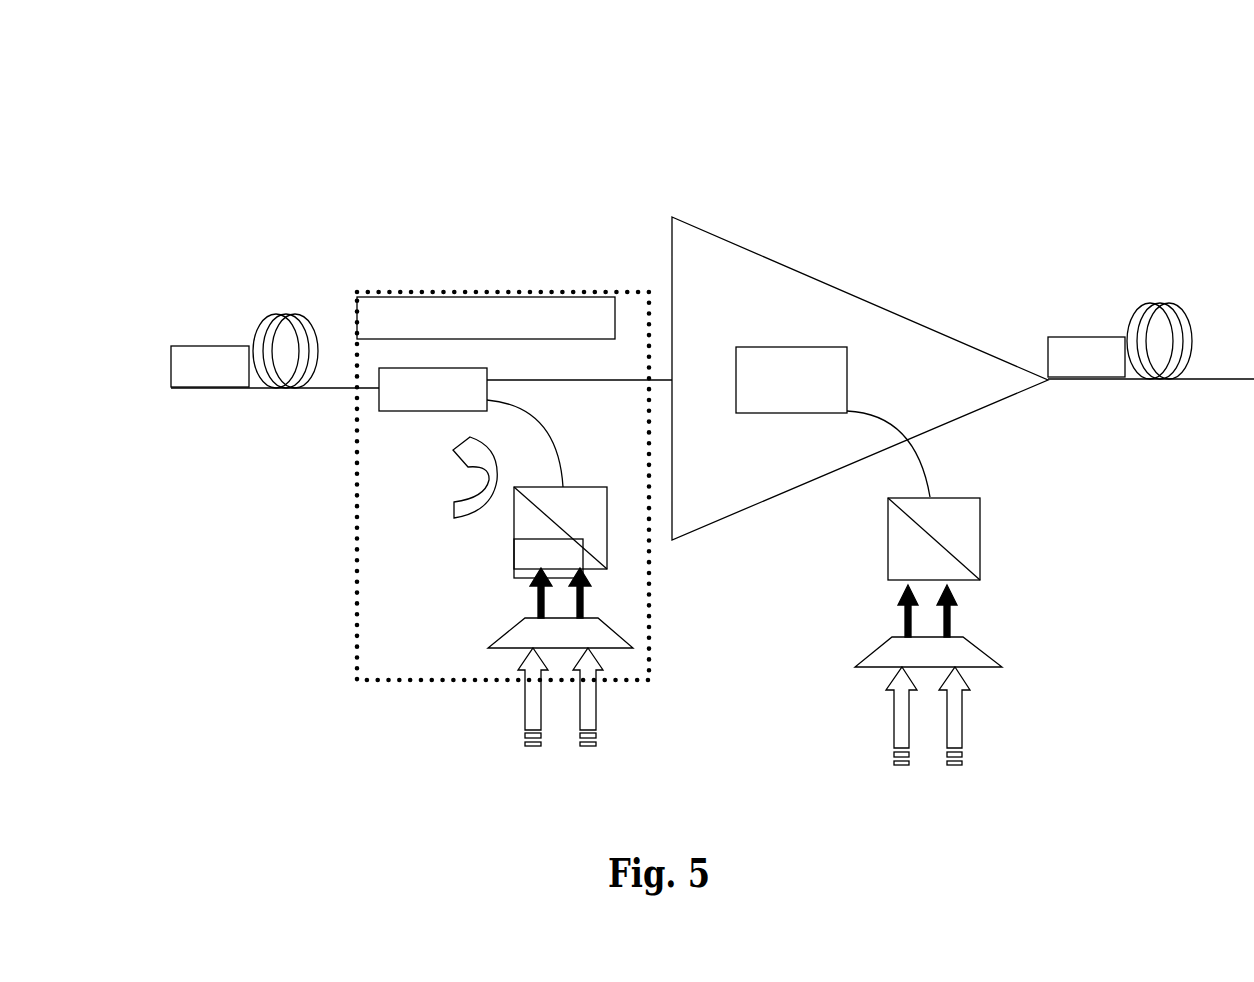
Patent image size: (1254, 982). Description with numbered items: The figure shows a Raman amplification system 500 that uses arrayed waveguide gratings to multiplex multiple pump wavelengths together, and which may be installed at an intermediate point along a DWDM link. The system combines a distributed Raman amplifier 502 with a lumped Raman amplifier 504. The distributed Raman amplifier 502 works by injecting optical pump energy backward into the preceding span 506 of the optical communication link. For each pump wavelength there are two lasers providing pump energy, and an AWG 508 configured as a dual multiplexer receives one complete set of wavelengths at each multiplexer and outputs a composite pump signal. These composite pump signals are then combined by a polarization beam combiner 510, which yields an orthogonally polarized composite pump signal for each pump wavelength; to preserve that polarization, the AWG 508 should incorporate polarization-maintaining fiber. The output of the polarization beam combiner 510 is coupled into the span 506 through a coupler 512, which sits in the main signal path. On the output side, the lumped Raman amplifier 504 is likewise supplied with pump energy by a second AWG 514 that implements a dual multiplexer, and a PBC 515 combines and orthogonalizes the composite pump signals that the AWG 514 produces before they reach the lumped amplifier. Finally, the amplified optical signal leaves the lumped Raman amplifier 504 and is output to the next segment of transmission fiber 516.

The Raman amplification system 500 is at (921, 78).
The distributed Raman amplifier 502 is at (520, 315).
The lumped Raman amplifier 504 is at (853, 292).
The preceding span 506 is at (284, 314).
The AWG 508 is at (620, 628).
The polarization beam combiner 510 is at (584, 487).
The coupler 512 is at (476, 388).
The AWG 514 is at (975, 648).
The PBC 515 is at (952, 498).
The transmission fiber 516 is at (1170, 303).